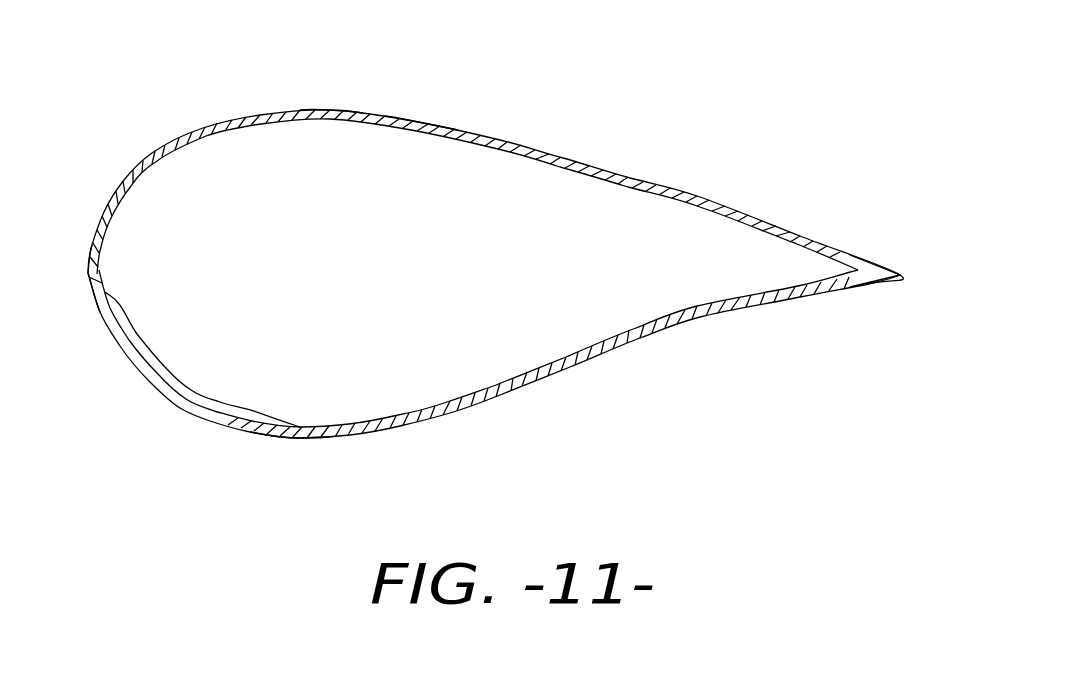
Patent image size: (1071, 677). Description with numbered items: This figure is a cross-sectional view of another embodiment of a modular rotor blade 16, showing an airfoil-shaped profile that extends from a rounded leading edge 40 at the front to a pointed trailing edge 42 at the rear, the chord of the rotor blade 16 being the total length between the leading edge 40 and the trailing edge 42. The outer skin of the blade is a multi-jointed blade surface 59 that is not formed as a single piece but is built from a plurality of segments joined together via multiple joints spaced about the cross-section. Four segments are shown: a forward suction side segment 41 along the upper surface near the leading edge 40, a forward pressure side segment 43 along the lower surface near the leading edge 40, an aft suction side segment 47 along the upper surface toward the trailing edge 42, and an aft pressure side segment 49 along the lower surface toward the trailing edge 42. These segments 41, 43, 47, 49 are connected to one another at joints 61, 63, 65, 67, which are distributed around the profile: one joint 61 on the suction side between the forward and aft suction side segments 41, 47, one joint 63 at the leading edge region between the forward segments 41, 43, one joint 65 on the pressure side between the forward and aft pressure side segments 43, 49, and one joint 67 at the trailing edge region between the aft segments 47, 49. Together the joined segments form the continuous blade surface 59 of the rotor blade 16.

The rotor blade 16 is at (730, 91).
The leading edge 40 is at (88, 272).
The forward suction side segment 41 is at (203, 128).
The trailing edge 42 is at (900, 275).
The forward pressure side segment 43 is at (180, 407).
The aft suction side segment 47 is at (563, 155).
The aft pressure side segment 49 is at (570, 365).
The multi-jointed blade surface 59 is at (413, 120).
The joint 61 is at (330, 112).
The joint 63 is at (100, 303).
The joint 65 is at (285, 438).
The joint 67 is at (873, 280).